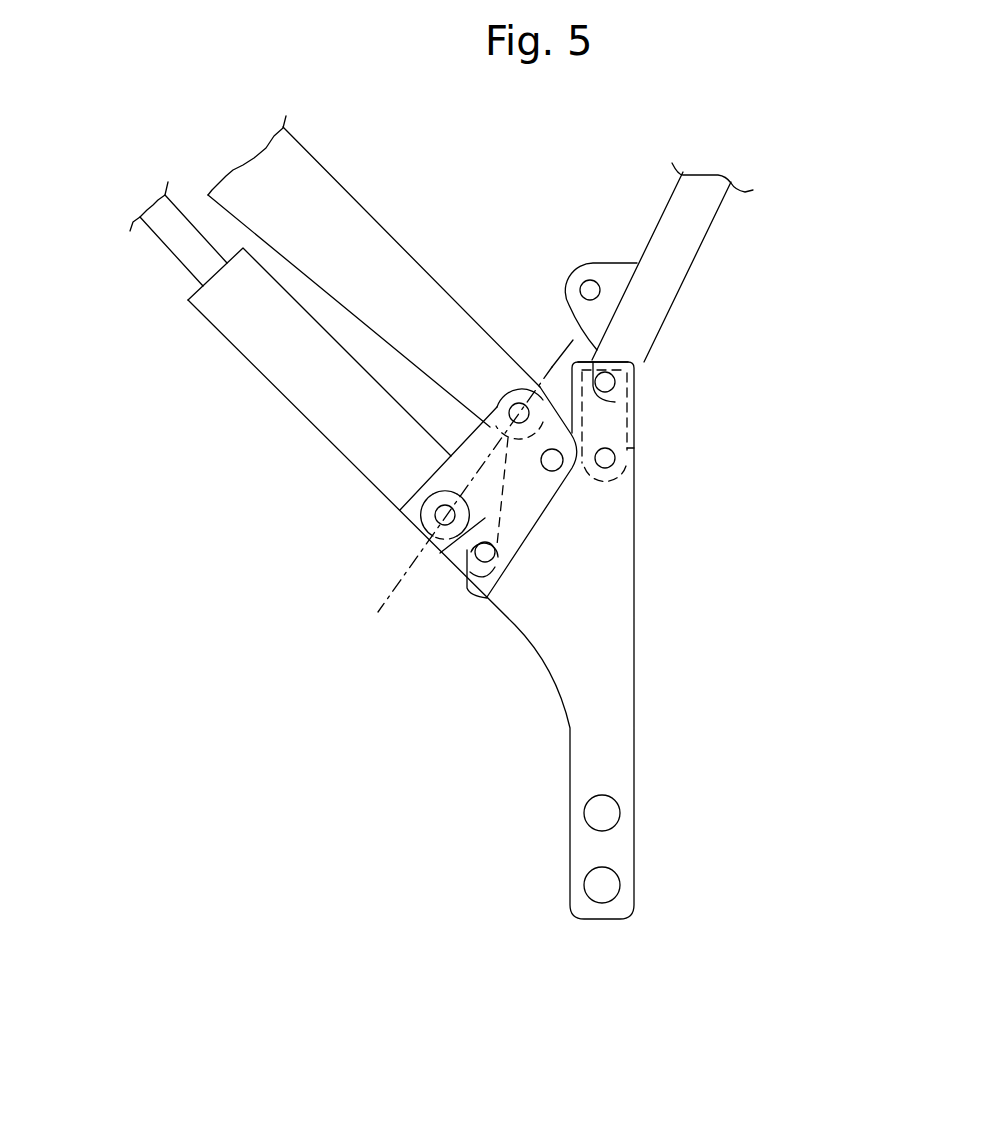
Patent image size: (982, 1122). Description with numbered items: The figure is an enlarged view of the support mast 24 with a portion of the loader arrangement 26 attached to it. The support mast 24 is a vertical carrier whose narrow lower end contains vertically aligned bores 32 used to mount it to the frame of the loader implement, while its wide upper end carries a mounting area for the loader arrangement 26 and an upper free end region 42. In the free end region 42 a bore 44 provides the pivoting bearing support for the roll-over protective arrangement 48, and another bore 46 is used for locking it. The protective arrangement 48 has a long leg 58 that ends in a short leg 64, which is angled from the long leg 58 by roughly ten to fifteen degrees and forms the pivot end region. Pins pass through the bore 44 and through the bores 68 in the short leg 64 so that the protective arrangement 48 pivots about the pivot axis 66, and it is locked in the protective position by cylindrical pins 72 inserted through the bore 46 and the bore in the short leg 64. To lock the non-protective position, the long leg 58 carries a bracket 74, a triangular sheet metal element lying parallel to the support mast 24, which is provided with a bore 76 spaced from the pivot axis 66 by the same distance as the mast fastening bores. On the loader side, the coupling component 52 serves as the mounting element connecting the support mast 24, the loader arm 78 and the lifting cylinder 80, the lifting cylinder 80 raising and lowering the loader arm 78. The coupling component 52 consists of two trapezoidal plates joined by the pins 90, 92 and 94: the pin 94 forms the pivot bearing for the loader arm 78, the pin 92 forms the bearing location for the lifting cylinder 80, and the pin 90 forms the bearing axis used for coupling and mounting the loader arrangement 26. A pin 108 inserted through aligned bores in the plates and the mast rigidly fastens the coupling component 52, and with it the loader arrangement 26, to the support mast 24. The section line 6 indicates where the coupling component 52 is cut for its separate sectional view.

The section line 6- 6 is at (545, 336).
The support mast 24 is at (733, 671).
The loader arrangement 26 is at (262, 457).
The bores 32 is at (602, 815).
The upper free end region 42 is at (635, 447).
The bore 44 is at (617, 363).
The bore 46 is at (598, 473).
The roll-over protective arrangement 48 is at (699, 250).
The coupling component 52 is at (440, 553).
The long leg 58 is at (700, 207).
The short leg 64 is at (627, 450).
The pivot axis 66 is at (605, 382).
The bores 68 is at (615, 402).
The pins 72 is at (605, 458).
The bracket 74 is at (617, 272).
The bore 76 is at (588, 290).
The loader arm 78 is at (417, 293).
The lifting cylinder 80 is at (238, 318).
The pin 90 is at (497, 583).
The pin 92 is at (445, 515).
The pin 94 is at (519, 413).
The pin 108 is at (552, 472).